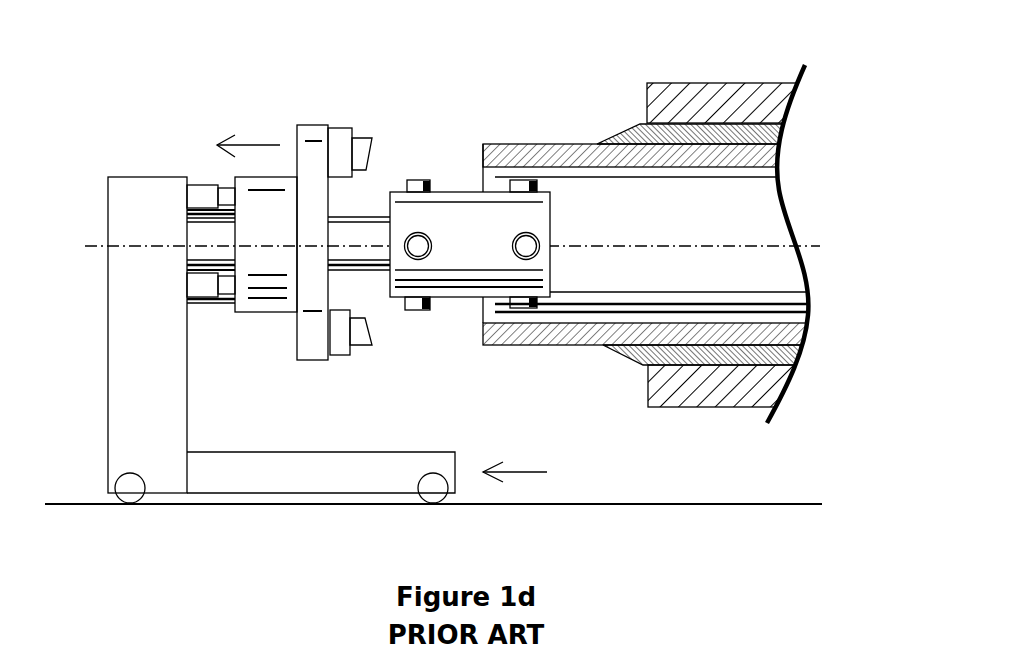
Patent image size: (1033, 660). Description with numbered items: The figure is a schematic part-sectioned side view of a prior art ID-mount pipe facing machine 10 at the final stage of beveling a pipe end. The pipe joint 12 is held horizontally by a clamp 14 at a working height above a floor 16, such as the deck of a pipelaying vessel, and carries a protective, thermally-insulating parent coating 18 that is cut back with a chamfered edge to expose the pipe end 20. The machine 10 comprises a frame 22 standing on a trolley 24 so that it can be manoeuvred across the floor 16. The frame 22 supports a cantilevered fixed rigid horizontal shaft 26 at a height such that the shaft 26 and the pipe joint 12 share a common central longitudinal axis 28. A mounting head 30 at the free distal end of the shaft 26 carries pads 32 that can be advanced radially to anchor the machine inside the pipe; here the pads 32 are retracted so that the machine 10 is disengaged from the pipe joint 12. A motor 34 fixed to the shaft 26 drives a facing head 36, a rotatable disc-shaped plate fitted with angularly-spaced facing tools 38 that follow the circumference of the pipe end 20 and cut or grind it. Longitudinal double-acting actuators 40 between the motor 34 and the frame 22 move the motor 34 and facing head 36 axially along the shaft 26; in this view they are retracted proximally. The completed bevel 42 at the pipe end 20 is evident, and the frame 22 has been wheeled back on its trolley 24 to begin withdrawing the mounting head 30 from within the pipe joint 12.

The pipe facing machine 10 is at (130, 83).
The pipe joint 12 is at (548, 85).
The clamp 14 is at (648, 386).
The floor 16 is at (78, 503).
The parent coating 18 is at (637, 127).
The pipe end 20 is at (518, 148).
The frame 22 is at (135, 375).
The trolley 24 is at (332, 450).
The shaft 26 is at (357, 229).
The central longitudinal axis 28 is at (100, 245).
The mounting head 30 is at (460, 212).
The pads 32 is at (530, 237).
The motor 34 is at (268, 307).
The facing head 36 is at (312, 130).
The facing tools 38 is at (358, 143).
The longitudinal double-acting actuators 40 is at (203, 303).
The bevel 42 is at (482, 337).